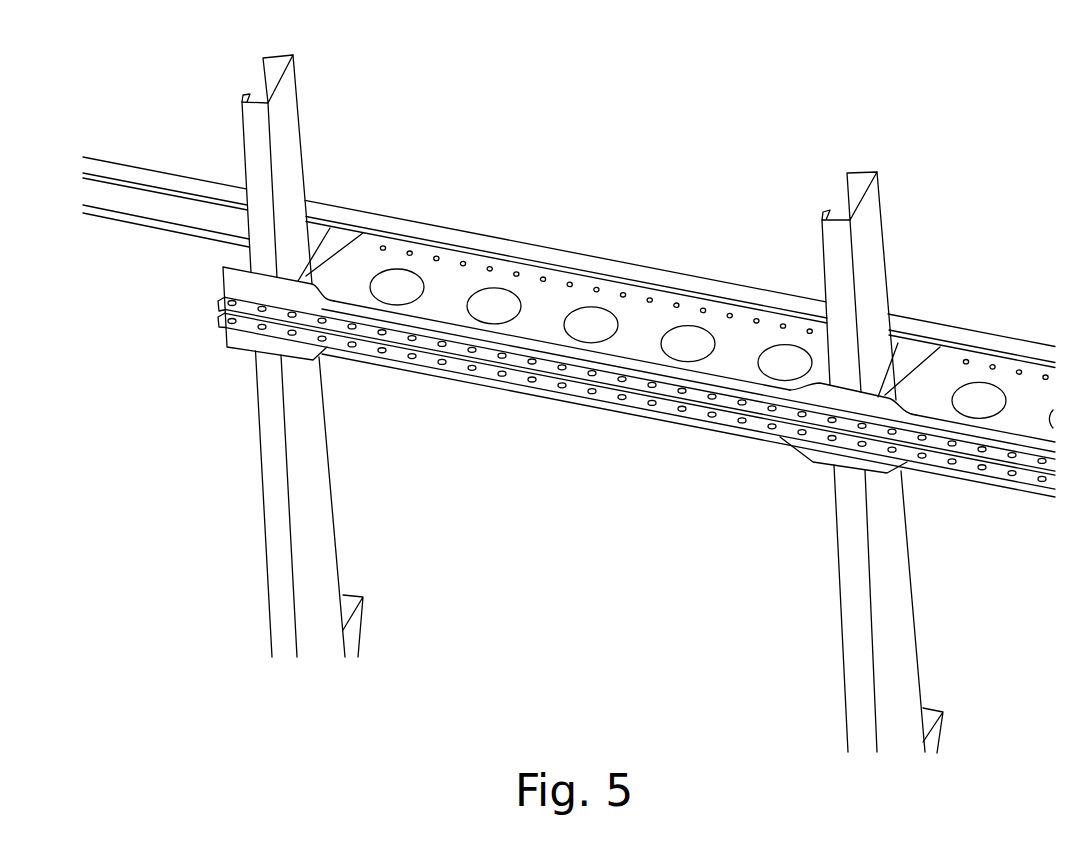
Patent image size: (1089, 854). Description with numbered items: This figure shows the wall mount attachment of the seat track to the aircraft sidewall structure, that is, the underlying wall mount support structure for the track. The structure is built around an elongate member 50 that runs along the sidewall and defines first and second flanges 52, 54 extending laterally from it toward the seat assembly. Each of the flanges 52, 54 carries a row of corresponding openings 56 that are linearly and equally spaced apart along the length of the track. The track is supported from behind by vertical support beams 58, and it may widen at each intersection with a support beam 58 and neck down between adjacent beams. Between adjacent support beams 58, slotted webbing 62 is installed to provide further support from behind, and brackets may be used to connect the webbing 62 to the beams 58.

The elongate member 50 is at (569, 317).
The first flange 52 is at (222, 296).
The second flange 54 is at (220, 313).
The openings 56 is at (443, 361).
The support beam 58 is at (297, 158).
The slotted webbing 62 is at (453, 282).